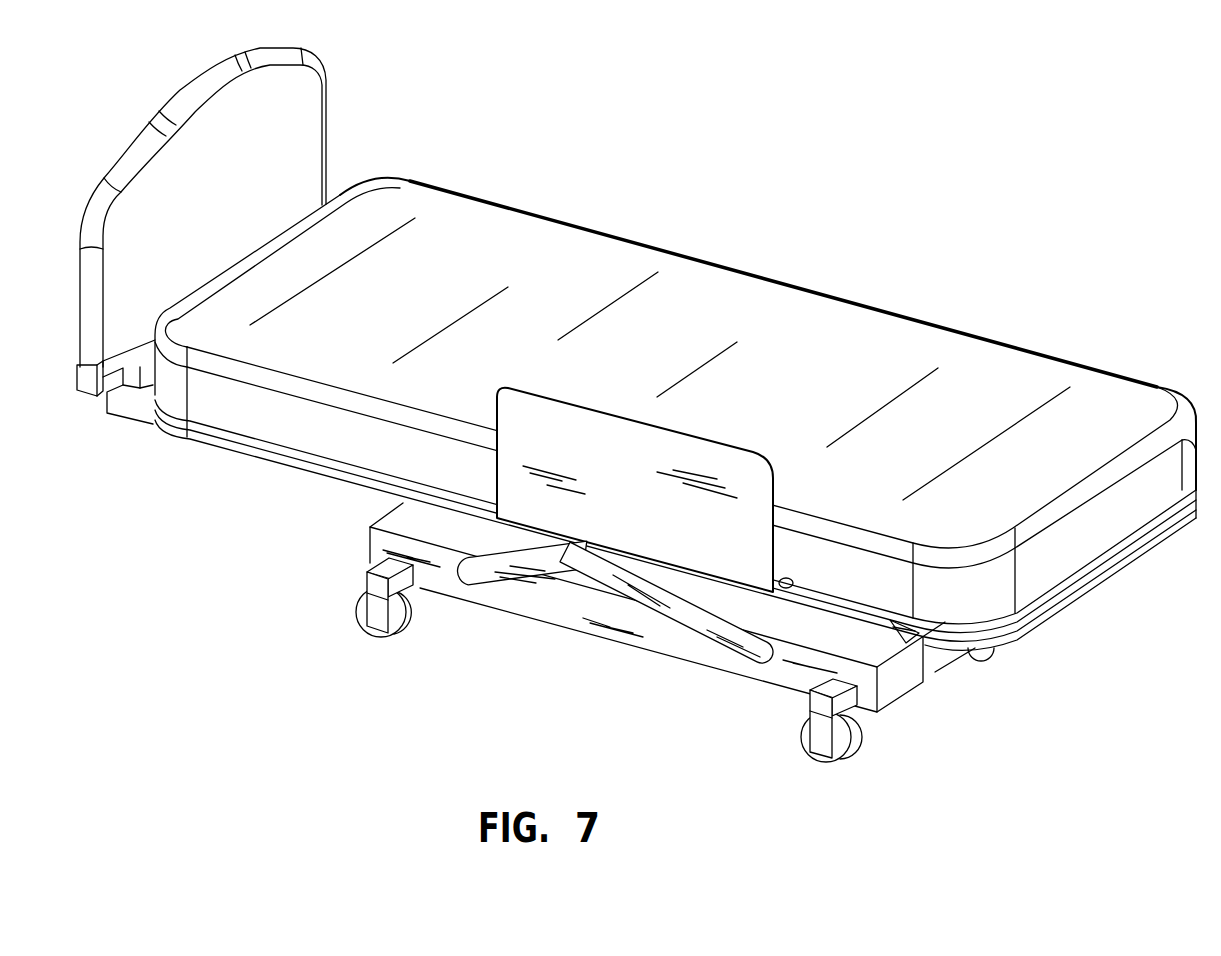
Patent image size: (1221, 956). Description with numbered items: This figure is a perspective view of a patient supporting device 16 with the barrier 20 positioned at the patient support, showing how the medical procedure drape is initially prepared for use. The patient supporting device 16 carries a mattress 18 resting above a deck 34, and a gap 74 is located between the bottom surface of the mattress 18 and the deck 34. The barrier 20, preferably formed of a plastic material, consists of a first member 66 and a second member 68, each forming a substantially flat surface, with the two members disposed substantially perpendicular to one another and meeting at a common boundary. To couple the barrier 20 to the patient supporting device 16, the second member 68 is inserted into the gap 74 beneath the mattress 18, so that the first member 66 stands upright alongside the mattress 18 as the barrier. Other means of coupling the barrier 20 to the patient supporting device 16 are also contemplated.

The patient supporting device 16 is at (1068, 292).
The mattress 18 is at (233, 403).
The barrier 20 is at (590, 505).
The deck 34 is at (318, 470).
The first member 66 is at (683, 543).
The second member 68 is at (790, 590).
The gap 74 is at (891, 622).